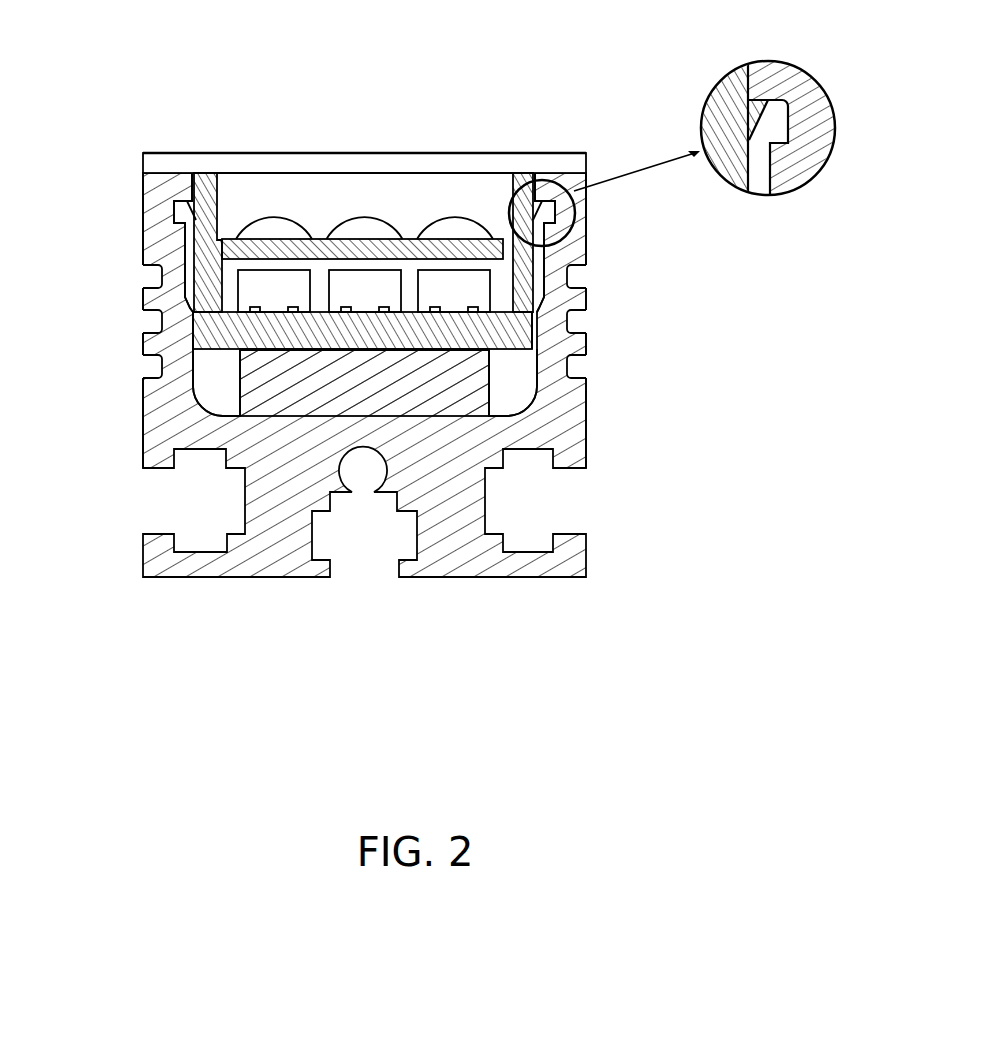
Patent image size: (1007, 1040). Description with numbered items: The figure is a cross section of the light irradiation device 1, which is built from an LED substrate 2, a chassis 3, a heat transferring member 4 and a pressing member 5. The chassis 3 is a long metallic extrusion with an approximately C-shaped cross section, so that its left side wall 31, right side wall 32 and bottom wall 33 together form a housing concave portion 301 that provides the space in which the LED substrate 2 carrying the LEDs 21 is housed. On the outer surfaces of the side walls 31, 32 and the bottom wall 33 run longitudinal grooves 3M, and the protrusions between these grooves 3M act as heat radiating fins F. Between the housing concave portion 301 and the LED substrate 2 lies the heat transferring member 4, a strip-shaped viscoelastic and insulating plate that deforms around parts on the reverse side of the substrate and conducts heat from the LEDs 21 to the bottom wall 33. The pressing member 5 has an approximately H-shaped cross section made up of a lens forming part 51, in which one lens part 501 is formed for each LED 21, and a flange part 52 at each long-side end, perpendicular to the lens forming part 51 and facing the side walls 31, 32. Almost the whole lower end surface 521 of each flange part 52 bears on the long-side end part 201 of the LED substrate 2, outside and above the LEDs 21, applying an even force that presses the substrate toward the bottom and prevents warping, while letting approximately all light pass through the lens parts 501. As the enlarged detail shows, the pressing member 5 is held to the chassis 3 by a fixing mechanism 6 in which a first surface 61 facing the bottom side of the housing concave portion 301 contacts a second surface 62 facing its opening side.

The light irradiation device 1 is at (108, 84).
The LED substrate 2 is at (195, 338).
The LED 21 is at (364, 291).
The long-side end part 201 is at (184, 296).
The chassis 3 is at (142, 190).
The left side wall 31 is at (142, 228).
The right side wall 32 is at (588, 210).
The bottom wall 33 is at (266, 578).
The grooves 3M is at (150, 272).
The housing concave portion 301 is at (400, 215).
The heat transferring member 4 is at (495, 386).
The pressing member 5 is at (224, 201).
The lens forming part 51 is at (318, 239).
The lens part 501 is at (260, 222).
The flange part 52 is at (226, 188).
The lower end surface 521 is at (190, 330).
The fixing mechanism 6 is at (183, 197).
The first surface 61 is at (792, 122).
The second surface 62 is at (769, 102).
The heat radiating fins F is at (587, 538).